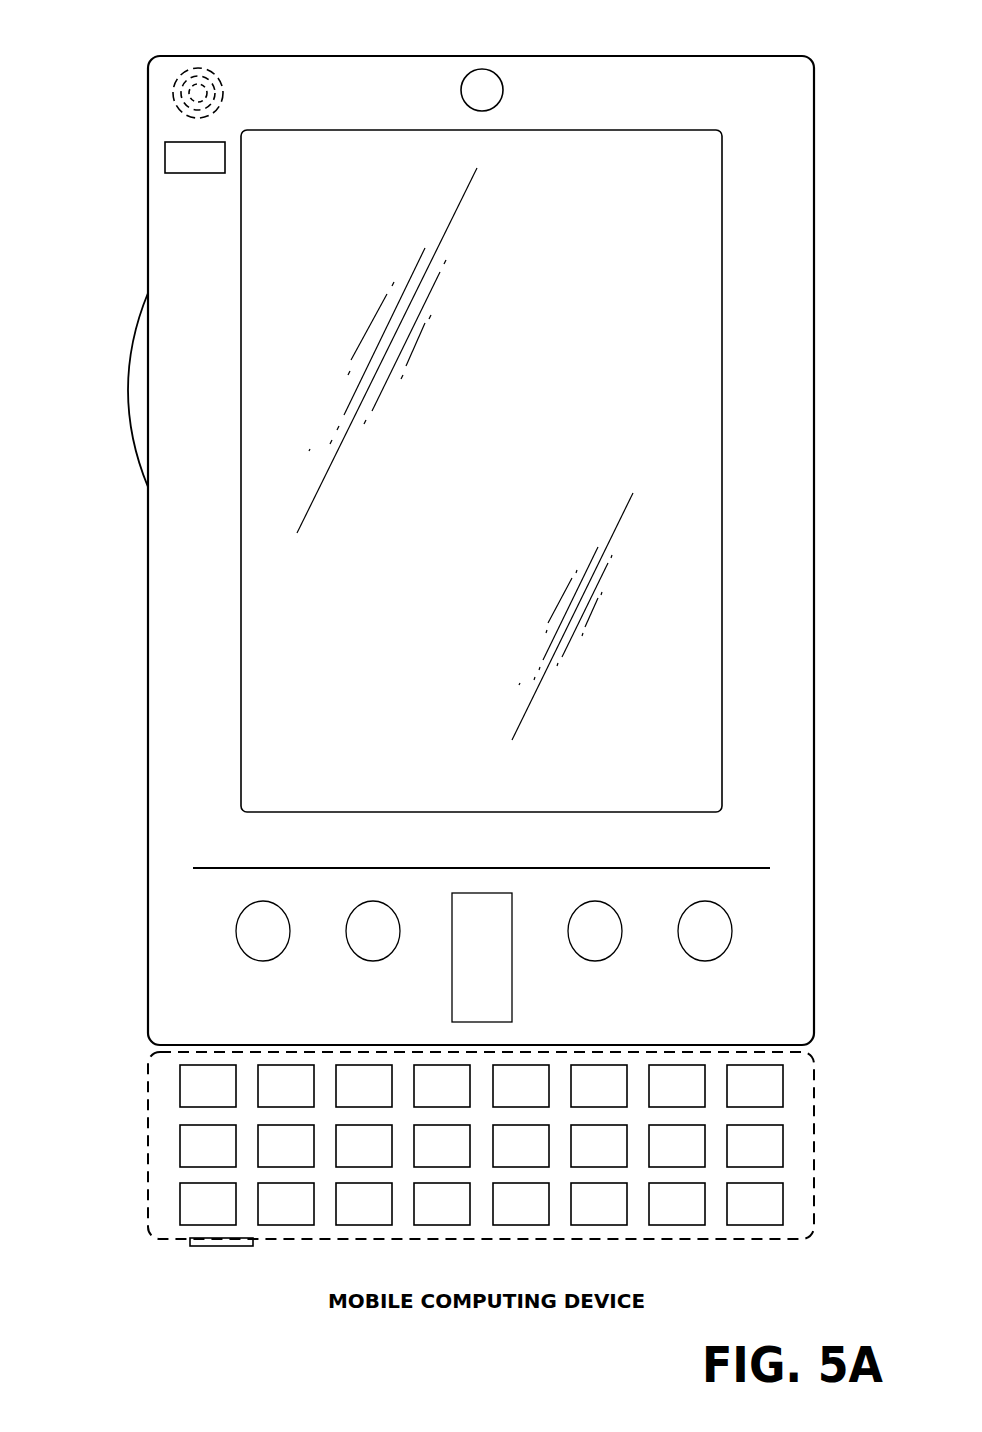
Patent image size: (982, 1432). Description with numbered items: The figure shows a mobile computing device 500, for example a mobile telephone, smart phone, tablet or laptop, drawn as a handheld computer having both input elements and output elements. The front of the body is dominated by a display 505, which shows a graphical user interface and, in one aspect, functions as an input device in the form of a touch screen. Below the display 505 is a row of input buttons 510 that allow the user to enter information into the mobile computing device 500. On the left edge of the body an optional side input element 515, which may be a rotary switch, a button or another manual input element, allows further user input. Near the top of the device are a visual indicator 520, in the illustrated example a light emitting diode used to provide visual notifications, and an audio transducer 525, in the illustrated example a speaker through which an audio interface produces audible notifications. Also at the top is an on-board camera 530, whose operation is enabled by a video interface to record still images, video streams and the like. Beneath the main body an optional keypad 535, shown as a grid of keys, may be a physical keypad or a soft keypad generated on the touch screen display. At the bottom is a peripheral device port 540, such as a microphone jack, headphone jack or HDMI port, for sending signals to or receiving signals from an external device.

The mobile computing device 500 is at (778, 56).
The display 505 is at (265, 647).
The input buttons 510 is at (263, 962).
The side input element 515 is at (128, 390).
The visual indicator 520 is at (165, 157).
The audio transducer 525 is at (170, 95).
The on-board camera 530 is at (482, 69).
The keypad 535 is at (157, 1143).
The peripheral device port 540 is at (197, 1247).